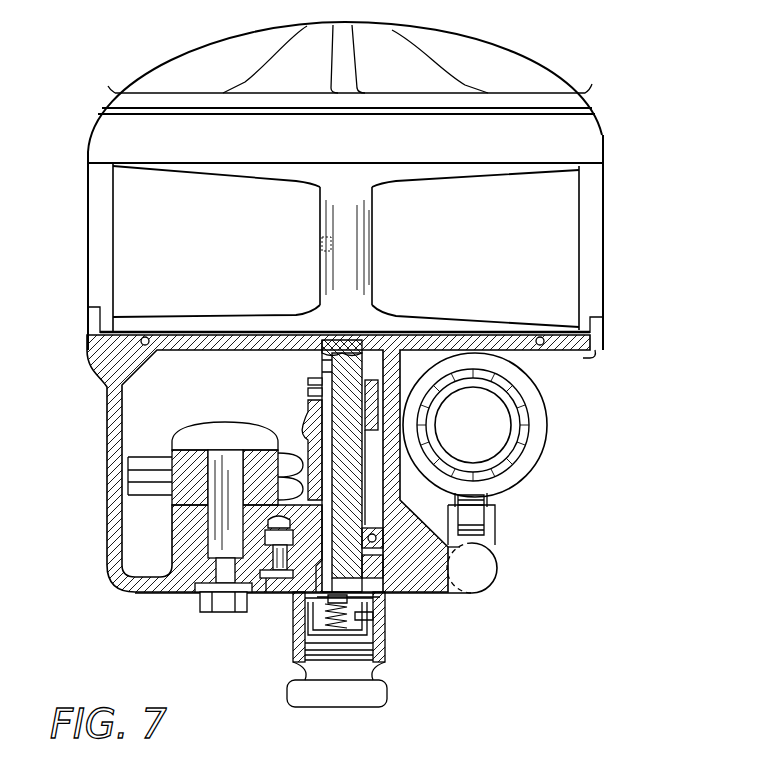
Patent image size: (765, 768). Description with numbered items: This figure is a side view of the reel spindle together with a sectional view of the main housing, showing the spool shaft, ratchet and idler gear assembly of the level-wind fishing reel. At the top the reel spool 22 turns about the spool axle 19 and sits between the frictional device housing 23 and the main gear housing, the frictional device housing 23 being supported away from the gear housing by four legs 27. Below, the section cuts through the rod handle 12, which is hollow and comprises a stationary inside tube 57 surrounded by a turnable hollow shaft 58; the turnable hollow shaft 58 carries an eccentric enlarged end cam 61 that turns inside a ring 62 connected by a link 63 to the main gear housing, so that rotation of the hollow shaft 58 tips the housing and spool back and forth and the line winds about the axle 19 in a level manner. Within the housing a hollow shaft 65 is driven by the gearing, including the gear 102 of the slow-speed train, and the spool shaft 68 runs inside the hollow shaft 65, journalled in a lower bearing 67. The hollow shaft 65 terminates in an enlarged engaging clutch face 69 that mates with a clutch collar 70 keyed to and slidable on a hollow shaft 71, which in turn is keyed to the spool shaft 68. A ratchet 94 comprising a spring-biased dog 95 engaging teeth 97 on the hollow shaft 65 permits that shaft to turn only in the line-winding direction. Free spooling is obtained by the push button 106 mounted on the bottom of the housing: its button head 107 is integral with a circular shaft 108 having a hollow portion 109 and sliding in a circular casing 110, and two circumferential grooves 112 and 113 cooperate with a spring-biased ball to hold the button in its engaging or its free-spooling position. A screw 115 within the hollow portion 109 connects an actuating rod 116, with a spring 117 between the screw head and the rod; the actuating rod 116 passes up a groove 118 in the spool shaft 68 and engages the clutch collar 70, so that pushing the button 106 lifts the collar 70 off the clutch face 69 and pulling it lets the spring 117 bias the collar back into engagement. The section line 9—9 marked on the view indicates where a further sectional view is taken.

The section line 9- 9 is at (170, 503).
The rod handle 12 is at (471, 382).
The spool axle 19 is at (370, 240).
The reel spool 22 is at (518, 175).
The frictional device housing 23 is at (508, 54).
The legs 27 is at (87, 226).
The stationary inside tube 57 is at (508, 395).
The turnable hollow shaft 58 is at (442, 402).
The enlarged end cam 61 is at (537, 418).
The ring 62 is at (498, 482).
The link 63 is at (488, 537).
The hollow shaft 65 is at (400, 497).
The lower bearing 67 is at (375, 568).
The spool shaft 68 is at (340, 358).
The engaging clutch face 69 is at (309, 426).
The clutch collar 70 is at (372, 382).
The hollow shaft 71 is at (323, 370).
The ratchet 94 is at (273, 567).
The dog 95 is at (302, 530).
The teeth 97 is at (373, 540).
The gear 102 is at (133, 457).
The push button 106 is at (351, 698).
The button head 107 is at (287, 695).
The circular shaft 108 is at (360, 671).
The hollow portion 109 is at (350, 624).
The circular casing 110 is at (383, 643).
The circumferential groove 112 is at (308, 640).
The circumferential groove 113 is at (307, 655).
The screw 115 is at (378, 600).
The actuating rod 116 is at (323, 392).
The spring 117 is at (363, 616).
The groove 118 is at (327, 378).